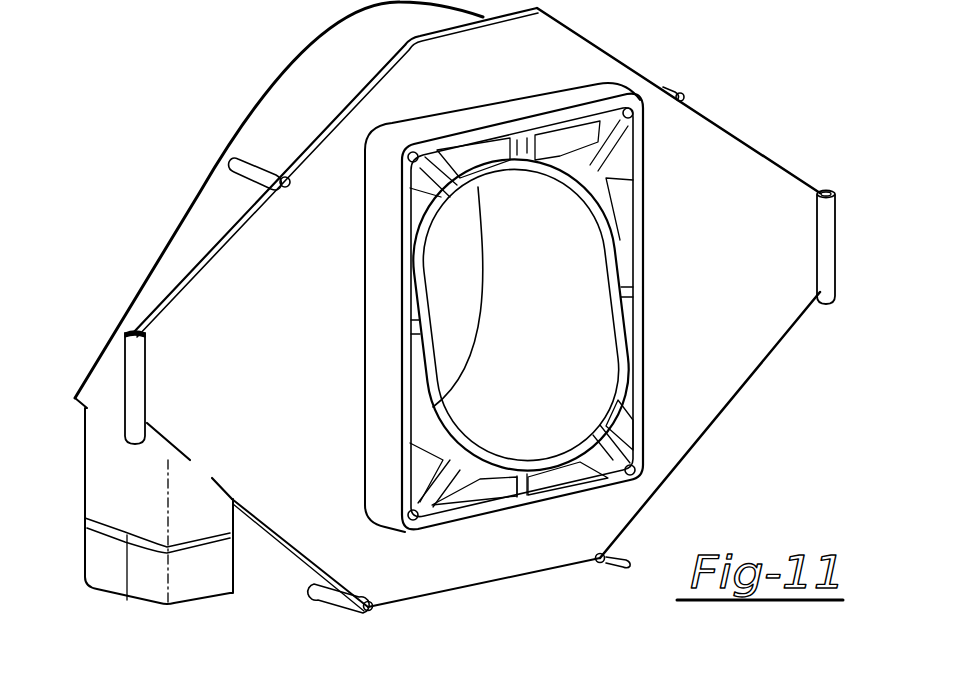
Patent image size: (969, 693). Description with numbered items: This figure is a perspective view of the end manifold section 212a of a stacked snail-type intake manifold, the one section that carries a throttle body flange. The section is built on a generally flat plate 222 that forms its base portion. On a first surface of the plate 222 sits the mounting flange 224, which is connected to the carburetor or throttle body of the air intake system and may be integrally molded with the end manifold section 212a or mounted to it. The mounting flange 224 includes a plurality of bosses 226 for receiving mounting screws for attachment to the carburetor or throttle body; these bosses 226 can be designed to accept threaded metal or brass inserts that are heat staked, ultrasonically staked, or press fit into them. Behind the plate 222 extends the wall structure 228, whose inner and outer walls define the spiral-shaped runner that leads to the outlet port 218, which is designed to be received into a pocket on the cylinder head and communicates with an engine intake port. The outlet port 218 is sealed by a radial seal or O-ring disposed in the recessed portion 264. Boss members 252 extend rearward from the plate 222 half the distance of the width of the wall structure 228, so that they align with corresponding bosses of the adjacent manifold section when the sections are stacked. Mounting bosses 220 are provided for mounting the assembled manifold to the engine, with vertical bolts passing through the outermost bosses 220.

The end manifold section 212a is at (456, 306).
The outlet port 218 is at (151, 521).
The mounting bosses 220 is at (133, 387).
The flat plate 222 is at (733, 207).
The mounting flange 224 is at (640, 233).
The bosses 226 is at (415, 148).
The wall structure 228 is at (314, 77).
The boss members 252 is at (253, 167).
The recessed portion 264 is at (130, 593).